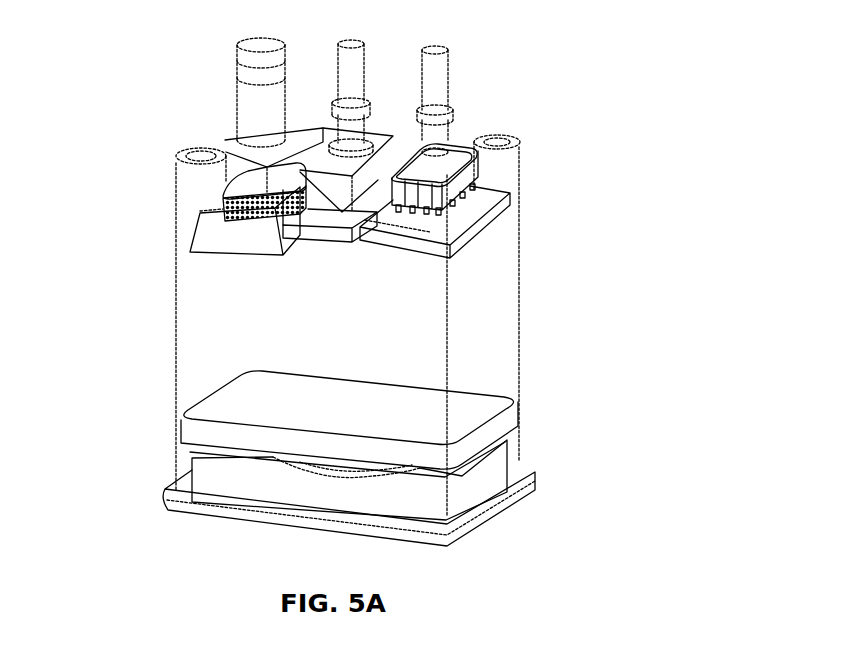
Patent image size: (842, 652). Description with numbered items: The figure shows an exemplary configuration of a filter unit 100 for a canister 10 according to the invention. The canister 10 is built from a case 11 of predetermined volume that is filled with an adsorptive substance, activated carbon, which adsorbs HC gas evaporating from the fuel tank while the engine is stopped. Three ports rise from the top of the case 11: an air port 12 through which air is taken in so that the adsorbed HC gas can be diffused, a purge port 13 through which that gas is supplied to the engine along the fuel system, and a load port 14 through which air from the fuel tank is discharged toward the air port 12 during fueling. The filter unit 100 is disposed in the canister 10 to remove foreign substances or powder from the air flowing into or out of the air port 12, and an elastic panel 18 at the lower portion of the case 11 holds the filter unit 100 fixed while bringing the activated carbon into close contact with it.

The canister 10 is at (143, 156).
The case 11 is at (513, 283).
The air port 12 is at (243, 108).
The purge port 13 is at (343, 72).
The load port 14 is at (441, 82).
The elastic panel 18 is at (500, 393).
The filter unit 100 is at (188, 224).